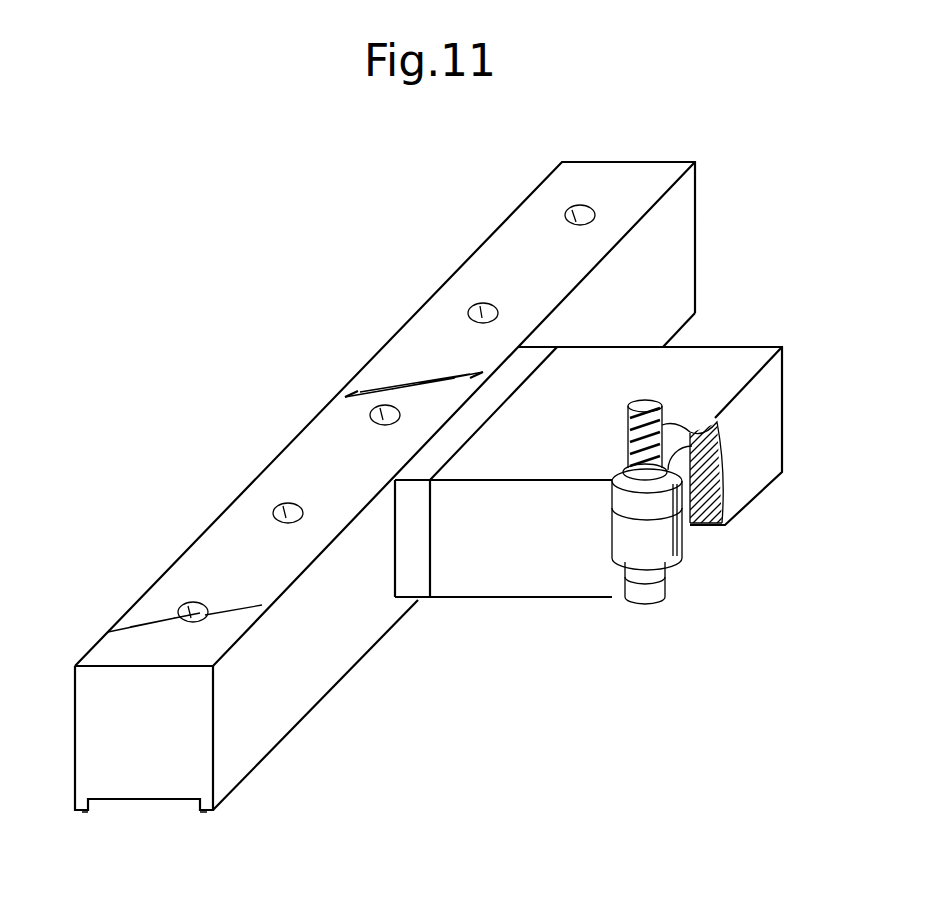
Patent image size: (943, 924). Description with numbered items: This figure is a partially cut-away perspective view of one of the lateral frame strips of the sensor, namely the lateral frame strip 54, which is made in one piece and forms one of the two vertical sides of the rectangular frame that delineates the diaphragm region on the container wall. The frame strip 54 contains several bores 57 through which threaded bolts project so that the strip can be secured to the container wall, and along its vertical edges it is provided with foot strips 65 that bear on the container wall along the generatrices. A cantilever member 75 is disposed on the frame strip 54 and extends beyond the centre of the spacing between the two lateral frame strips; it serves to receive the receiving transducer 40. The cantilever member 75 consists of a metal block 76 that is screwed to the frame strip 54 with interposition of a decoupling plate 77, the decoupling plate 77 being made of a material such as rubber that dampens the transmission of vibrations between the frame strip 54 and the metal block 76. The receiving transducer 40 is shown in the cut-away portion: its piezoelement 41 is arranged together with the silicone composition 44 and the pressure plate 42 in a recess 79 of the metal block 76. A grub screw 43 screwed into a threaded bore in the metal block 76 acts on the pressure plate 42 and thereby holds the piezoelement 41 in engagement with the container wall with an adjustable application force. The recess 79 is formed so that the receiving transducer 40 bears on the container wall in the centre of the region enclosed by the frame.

The lateral frame strip 54 is at (628, 172).
The bores 57 is at (565, 213).
The foot strips 65 is at (82, 813).
The cantilever member 75 is at (747, 341).
The metal block 76 is at (528, 600).
The decoupling plate 77 is at (415, 600).
The recess 79 is at (693, 493).
The receiving transducer 40 is at (694, 518).
The piezoelement 41 is at (655, 592).
The pressure plate 42 is at (660, 500).
The grub screw 43 is at (665, 424).
The silicone composition 44 is at (665, 545).